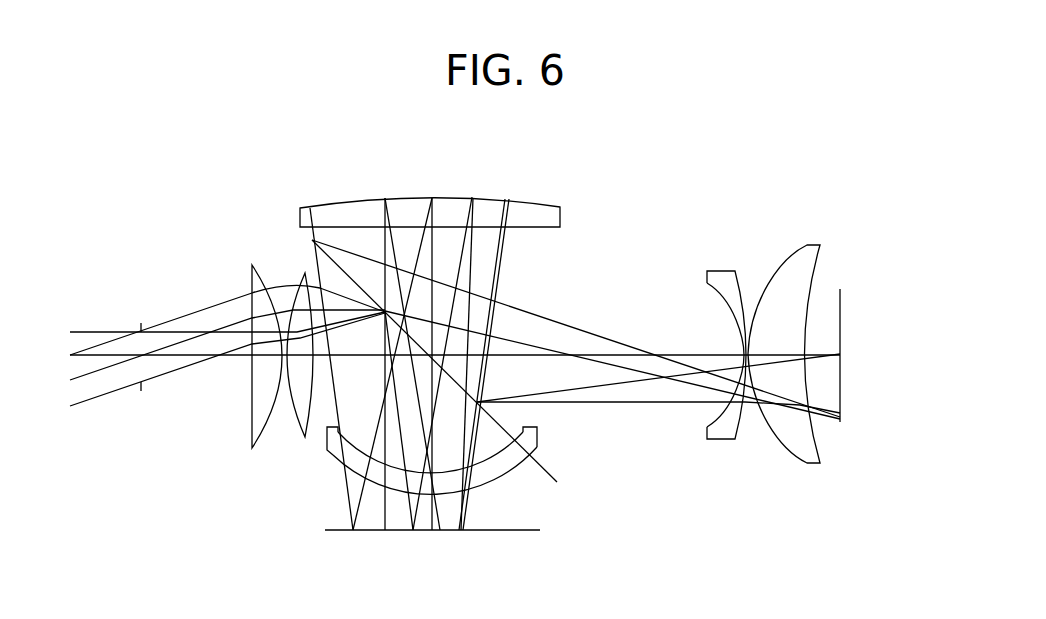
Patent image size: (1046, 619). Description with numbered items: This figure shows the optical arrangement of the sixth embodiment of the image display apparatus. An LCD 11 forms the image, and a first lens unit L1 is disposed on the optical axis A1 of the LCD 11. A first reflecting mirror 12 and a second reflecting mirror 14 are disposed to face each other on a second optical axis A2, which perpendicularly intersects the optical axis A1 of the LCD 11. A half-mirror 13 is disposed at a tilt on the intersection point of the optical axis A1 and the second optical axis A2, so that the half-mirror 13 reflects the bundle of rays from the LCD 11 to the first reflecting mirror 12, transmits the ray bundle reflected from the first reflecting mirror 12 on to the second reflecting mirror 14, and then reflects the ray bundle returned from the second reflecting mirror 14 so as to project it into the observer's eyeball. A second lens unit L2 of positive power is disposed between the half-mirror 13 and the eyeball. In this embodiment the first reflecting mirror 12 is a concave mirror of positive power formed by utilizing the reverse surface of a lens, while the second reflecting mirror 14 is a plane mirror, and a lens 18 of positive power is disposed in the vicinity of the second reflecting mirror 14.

The LCD 11 is at (842, 292).
The first reflecting mirror 12 is at (533, 202).
The half-mirror 13 is at (553, 472).
The second reflecting mirror 14 is at (516, 532).
The lens 18 is at (538, 436).
The optical axis A1 is at (672, 353).
The second optical axis A2 is at (433, 515).
The first lens unit L1 is at (830, 476).
The second lens unit L2 is at (317, 455).